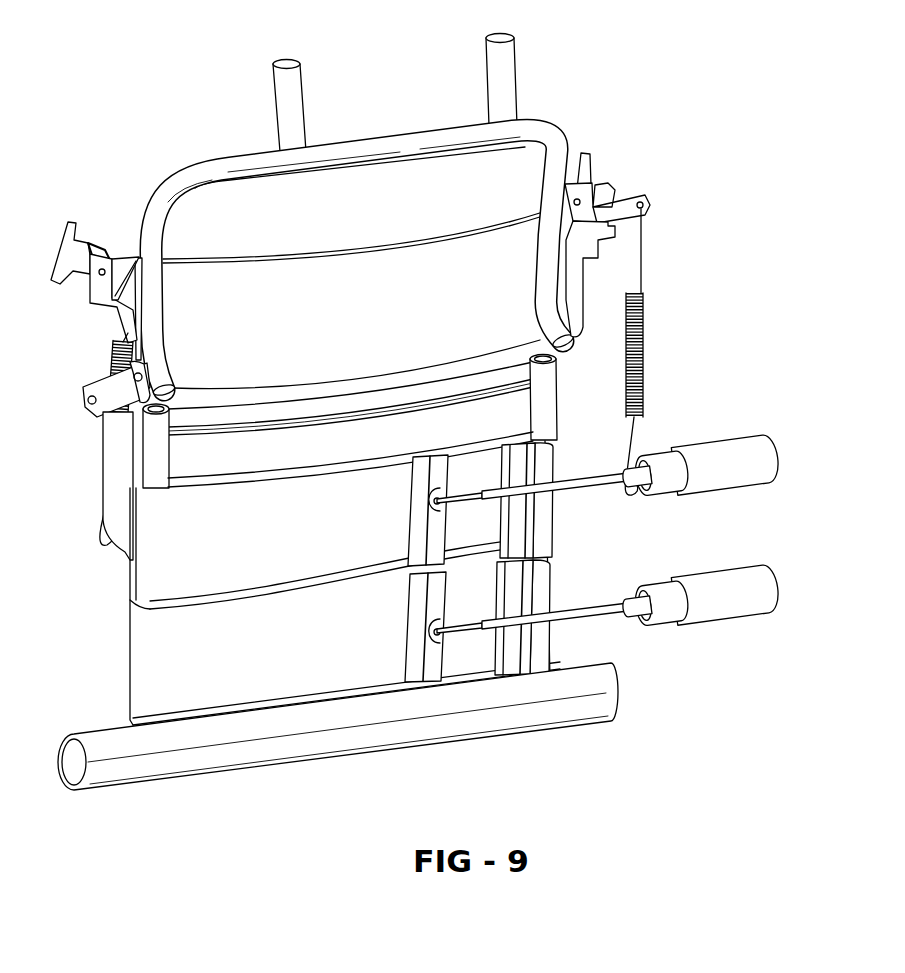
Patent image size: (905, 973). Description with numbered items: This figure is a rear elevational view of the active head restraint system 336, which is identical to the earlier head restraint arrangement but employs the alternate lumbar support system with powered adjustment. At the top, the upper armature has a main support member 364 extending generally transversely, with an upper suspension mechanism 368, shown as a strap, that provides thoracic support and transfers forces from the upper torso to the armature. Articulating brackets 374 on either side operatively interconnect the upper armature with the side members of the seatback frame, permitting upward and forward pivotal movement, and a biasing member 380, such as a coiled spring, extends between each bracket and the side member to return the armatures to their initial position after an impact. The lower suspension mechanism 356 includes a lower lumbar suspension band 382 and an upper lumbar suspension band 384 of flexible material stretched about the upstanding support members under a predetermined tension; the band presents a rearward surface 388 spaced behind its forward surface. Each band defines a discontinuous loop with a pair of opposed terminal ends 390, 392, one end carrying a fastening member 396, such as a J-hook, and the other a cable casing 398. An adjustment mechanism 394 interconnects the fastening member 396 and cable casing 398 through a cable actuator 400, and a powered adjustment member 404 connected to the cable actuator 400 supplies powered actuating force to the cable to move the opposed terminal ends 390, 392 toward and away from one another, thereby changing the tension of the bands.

The active head restraint system 336 is at (620, 112).
The lower suspension mechanism 356 is at (118, 626).
The main support member 364 is at (383, 145).
The upper suspension mechanism 368 is at (343, 313).
The articulating bracket 374 is at (573, 265).
The biasing member 380 is at (643, 330).
The lower lumbar suspension band 382 is at (150, 679).
The upper lumbar suspension band 384 is at (103, 523).
The rearward surface 388 is at (323, 483).
The terminal end 390 is at (427, 517).
The terminal end 392 is at (548, 521).
The adjustment mechanism 394 is at (734, 394).
The fastening member 396 is at (447, 478).
The cable casing 398 is at (540, 541).
The cable actuator 400 is at (580, 476).
The powered adjustment member 404 is at (770, 448).